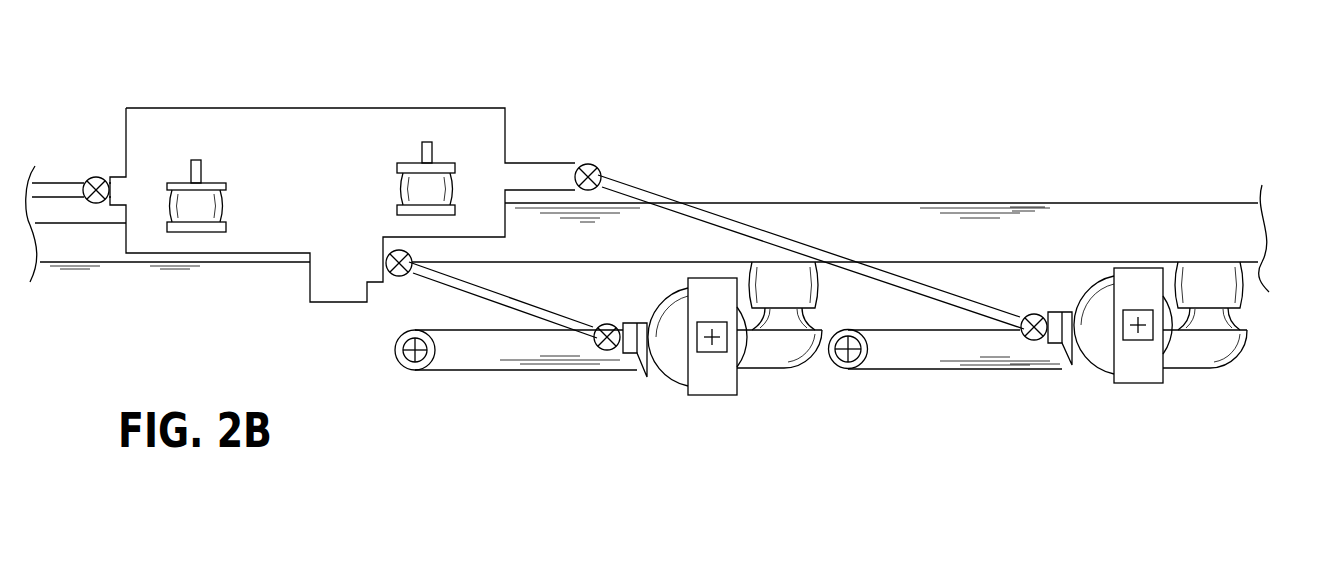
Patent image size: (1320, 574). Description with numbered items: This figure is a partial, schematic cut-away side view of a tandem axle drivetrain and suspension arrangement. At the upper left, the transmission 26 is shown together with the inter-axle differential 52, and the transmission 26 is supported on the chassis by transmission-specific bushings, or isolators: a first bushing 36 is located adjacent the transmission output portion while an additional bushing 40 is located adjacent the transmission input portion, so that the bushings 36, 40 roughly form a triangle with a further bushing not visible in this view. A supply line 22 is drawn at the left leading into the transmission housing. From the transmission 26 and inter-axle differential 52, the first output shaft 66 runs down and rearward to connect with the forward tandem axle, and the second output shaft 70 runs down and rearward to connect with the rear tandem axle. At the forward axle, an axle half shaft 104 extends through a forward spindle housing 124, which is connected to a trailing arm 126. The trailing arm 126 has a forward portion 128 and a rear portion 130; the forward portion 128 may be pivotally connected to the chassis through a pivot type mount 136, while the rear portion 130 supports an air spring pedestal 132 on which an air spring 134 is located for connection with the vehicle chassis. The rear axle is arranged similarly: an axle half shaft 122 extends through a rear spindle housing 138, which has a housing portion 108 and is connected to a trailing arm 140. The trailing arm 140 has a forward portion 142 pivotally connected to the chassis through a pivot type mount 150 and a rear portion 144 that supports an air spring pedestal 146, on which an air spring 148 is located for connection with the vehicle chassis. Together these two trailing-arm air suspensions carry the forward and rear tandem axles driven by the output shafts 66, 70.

The fluid supply line 22 is at (57, 176).
The transmission 26 is at (292, 100).
The first bushing 36 is at (397, 189).
The bushing 40 is at (213, 181).
The inter-axle differential 52 is at (442, 110).
The first output shaft 66 is at (505, 291).
The second output shaft 70 is at (773, 228).
The axle half shaft 104 is at (712, 350).
The actuator housing 108 is at (1088, 283).
The axle half shaft 122 is at (1135, 329).
The forward spindle housing 124 is at (660, 386).
The trailing arm 126 is at (480, 352).
The forward portion 128 is at (380, 350).
The rear portion 130 is at (774, 392).
The air spring pedestal 132 is at (810, 367).
The air spring 134 is at (815, 290).
The pivot type mount 136 is at (421, 366).
The rear spindle housing 138 is at (1138, 385).
The trailing arm 140 is at (965, 371).
The forward portion 142 is at (882, 388).
The rear portion 144 is at (1262, 312).
The air spring pedestal 146 is at (1218, 346).
The air spring 148 is at (1207, 272).
The pivot type mount 150 is at (866, 348).